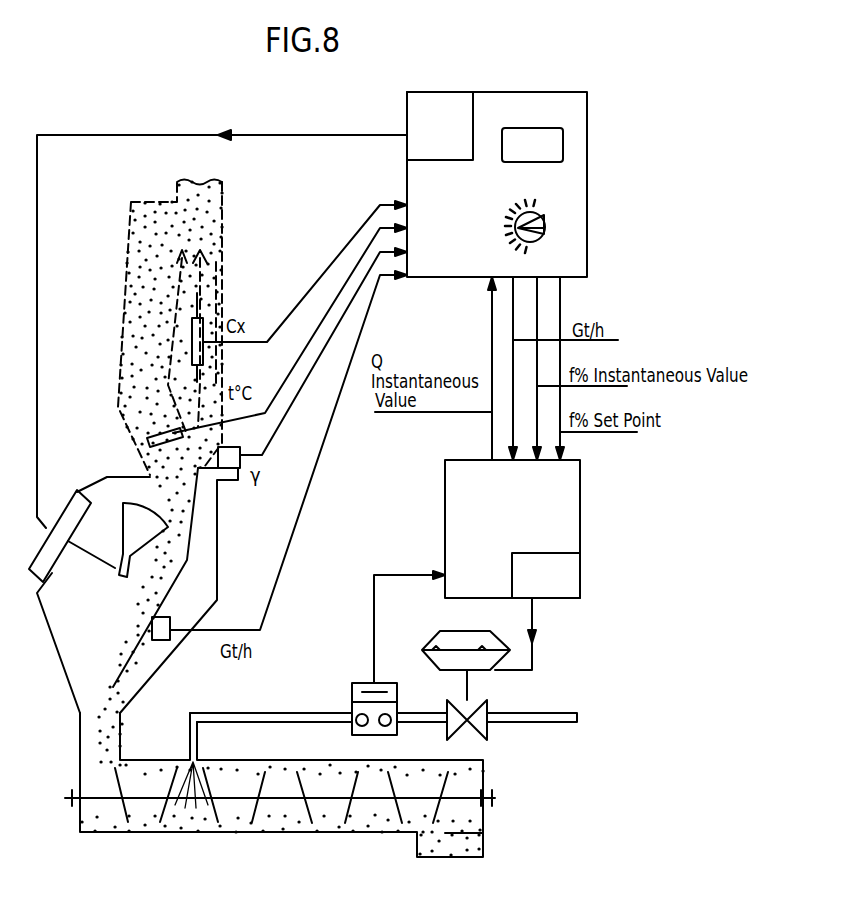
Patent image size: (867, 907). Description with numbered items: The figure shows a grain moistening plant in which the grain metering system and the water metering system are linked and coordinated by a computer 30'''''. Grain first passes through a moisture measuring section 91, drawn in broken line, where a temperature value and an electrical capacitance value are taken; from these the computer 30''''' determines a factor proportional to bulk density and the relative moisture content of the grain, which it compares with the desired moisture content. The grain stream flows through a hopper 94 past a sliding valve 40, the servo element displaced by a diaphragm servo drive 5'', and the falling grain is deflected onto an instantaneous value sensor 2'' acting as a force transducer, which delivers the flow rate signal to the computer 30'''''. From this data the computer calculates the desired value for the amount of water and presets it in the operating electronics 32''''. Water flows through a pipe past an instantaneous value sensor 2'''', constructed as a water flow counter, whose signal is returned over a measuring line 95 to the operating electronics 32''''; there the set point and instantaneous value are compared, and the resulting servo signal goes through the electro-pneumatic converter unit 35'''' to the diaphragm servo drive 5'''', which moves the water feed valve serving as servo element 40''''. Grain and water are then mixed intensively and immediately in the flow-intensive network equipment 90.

The computer 30''''' is at (524, 184).
The operating electronics 32'''' is at (540, 565).
The electro-pneumatic converter unit 35'''' is at (546, 575).
The moisture measuring section 91 is at (115, 345).
The hopper 94 is at (117, 615).
The sliding valve 40 is at (143, 540).
The servo drive 5'' is at (60, 516).
The instantaneous value sensor 2'' is at (173, 613).
The instantaneous value sensor 2'''' is at (358, 698).
The servo drive 5'''' is at (457, 633).
The servo element 40'''' is at (493, 705).
The measuring line 95 is at (397, 650).
The flow-intensive network equipment 90 is at (245, 833).